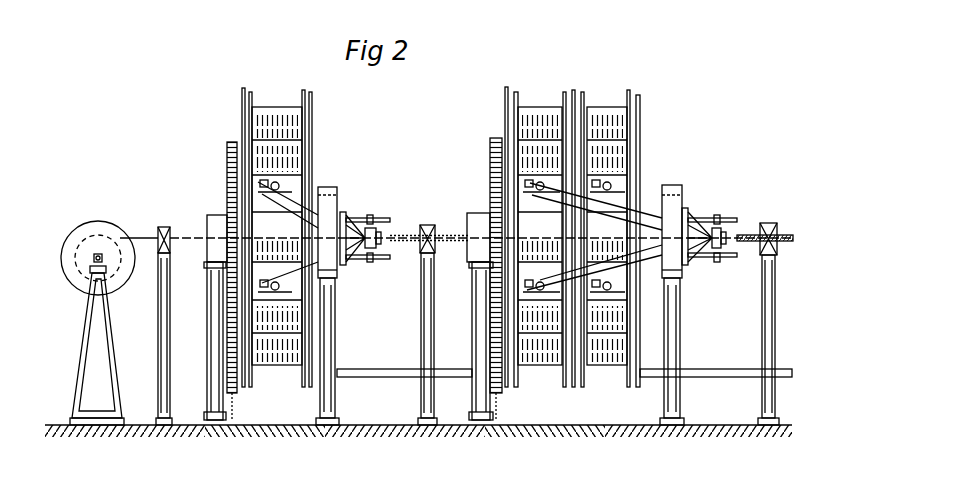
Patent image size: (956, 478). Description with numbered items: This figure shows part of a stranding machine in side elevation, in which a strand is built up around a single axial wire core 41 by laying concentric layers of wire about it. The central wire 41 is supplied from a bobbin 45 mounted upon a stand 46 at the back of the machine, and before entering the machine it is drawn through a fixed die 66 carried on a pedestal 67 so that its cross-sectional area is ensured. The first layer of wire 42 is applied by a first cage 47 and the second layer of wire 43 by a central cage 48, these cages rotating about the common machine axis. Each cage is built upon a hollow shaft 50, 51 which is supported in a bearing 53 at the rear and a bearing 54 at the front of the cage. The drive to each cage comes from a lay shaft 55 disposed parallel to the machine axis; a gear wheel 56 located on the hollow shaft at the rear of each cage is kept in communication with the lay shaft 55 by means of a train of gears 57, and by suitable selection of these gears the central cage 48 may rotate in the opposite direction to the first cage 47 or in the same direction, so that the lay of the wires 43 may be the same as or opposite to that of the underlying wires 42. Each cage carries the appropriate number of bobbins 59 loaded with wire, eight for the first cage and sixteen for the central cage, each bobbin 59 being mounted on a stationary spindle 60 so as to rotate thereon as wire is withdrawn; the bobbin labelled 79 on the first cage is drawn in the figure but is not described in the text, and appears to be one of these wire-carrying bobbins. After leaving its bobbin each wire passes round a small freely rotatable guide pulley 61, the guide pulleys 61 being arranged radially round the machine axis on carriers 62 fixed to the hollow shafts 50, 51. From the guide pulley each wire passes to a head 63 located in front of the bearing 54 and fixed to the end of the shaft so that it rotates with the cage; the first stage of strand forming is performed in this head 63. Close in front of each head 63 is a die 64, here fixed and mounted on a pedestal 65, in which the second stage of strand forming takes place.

The axial wire core 41 is at (138, 238).
The first layer of wire 42 is at (402, 234).
The second layer of wire 43 is at (742, 234).
The bobbin 45 is at (78, 243).
The stand 46 is at (92, 362).
The first cage 47 is at (243, 125).
The central cage 48 is at (507, 118).
The hollow shaft 50 is at (207, 232).
The hollow shaft 51 is at (468, 222).
The rear bearing 53 is at (222, 225).
The front bearing 54 is at (328, 222).
The lay shaft 55 is at (375, 378).
The gear wheel 56 is at (230, 150).
The train of gears 57 is at (232, 390).
The bobbin 59 is at (608, 118).
The stationary spindle 60 is at (243, 100).
The guide pulley 61 is at (262, 292).
The carrier 62 is at (262, 266).
The head 63 is at (354, 212).
The die 64 is at (428, 225).
The pedestal 65 is at (432, 395).
The fixed die 66 is at (165, 226).
The pedestal 67 is at (160, 393).
The bobbin 79 is at (273, 107).